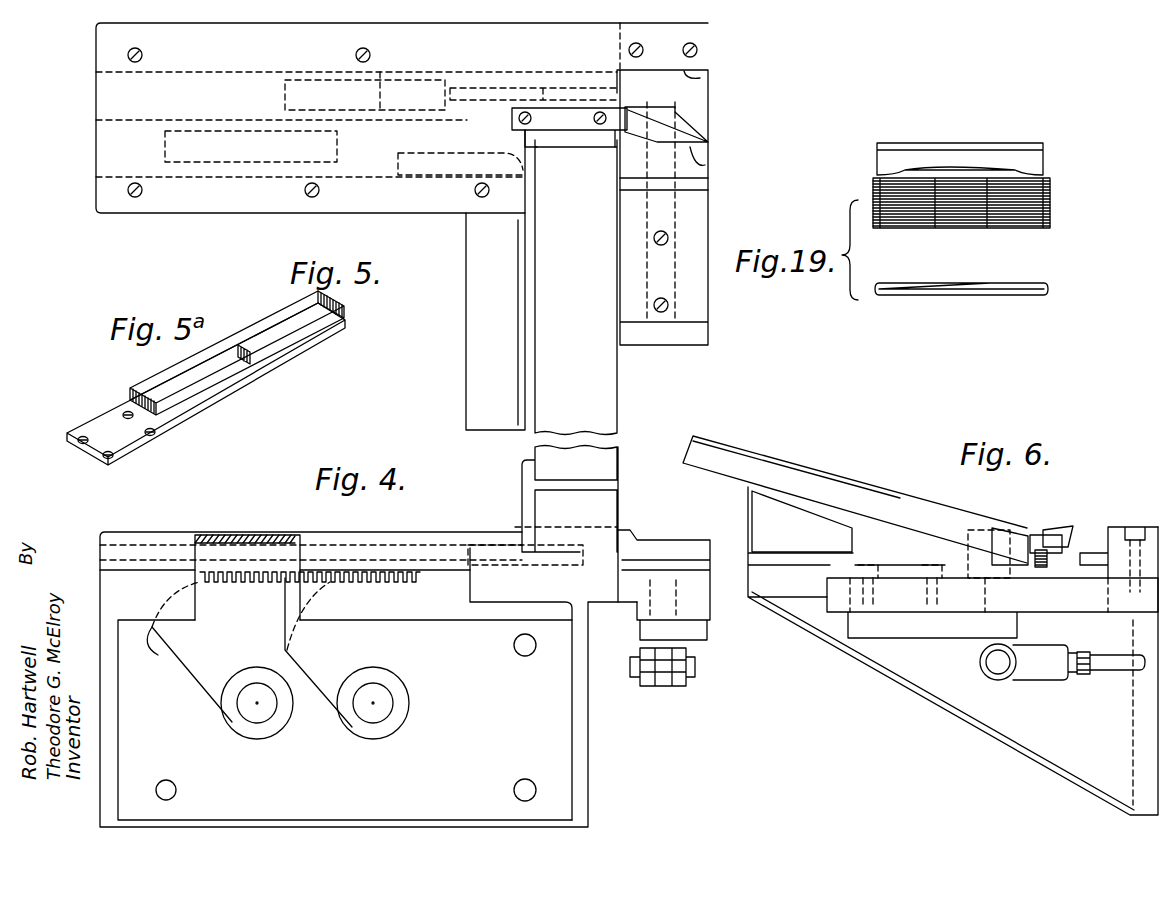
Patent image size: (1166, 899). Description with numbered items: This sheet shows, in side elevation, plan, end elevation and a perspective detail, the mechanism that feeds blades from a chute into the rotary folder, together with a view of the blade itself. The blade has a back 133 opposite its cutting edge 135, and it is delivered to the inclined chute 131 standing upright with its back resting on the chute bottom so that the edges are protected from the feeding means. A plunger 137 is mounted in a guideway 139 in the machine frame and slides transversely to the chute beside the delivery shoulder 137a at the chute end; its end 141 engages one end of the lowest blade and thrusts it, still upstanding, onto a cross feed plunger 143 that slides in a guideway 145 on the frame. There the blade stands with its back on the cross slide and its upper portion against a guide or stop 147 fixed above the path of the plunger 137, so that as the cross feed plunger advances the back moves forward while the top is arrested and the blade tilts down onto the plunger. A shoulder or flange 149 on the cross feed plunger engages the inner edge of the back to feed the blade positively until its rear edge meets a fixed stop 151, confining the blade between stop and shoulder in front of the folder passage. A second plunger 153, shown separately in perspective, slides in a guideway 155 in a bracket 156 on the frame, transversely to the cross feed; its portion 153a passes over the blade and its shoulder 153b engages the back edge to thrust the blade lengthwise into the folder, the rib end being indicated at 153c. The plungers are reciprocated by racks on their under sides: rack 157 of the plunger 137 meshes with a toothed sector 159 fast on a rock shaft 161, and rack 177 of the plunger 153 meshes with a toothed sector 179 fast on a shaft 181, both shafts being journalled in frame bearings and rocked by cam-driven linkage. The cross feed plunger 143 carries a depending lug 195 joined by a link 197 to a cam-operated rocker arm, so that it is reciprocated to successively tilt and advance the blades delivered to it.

In FIG. 6, the chute 131 is at (745, 455).
In FIG. 19, the back 133 is at (968, 147).
In FIG. 19, the cutting edge 135 is at (967, 230).
In FIG. 5, the plunger 137 is at (437, 148).
In FIG. 5, the delivery shoulder 137a is at (513, 192).
In FIG. 5, the guideway 139 is at (457, 177).
In FIG. 5, the end of plunger 141 is at (585, 140).
In FIG. 5, the cross feed plunger 143 is at (700, 211).
In FIG. 6, the cross feed plunger 143 is at (907, 568).
In FIG. 4, the guideway 145 is at (706, 601).
In FIG. 6, the guideway 145 is at (1050, 604).
In FIG. 5, the guide or stop 147 is at (705, 163).
In FIG. 6, the guide or stop 147 is at (1062, 527).
In FIG. 5, the shoulder or flange 149 is at (702, 187).
In FIG. 6, the shoulder or flange 149 is at (994, 532).
In FIG. 5, the fixed stop 151 is at (702, 77).
In FIG. 5, the plunger 153 is at (510, 72).
In FIG. 5A, the plunger 153 is at (188, 420).
In FIG. 5A, the portion of plunger 153a is at (300, 350).
In FIG. 5A, the shoulder 153b is at (252, 363).
In FIG. 5A, the rib end 153c is at (357, 303).
In FIG. 5, the guideway 155 is at (468, 120).
In FIG. 5, the bracket 156 is at (472, 322).
In FIG. 4, the rack 157 is at (222, 567).
In FIG. 4, the toothed sector 159 is at (188, 668).
In FIG. 4, the rock shaft 161 is at (247, 712).
In FIG. 4, the rack 177 is at (402, 582).
In FIG. 4, the toothed sector 179 is at (408, 678).
In FIG. 4, the shaft 181 is at (390, 705).
In FIG. 4, the lug 195 is at (695, 660).
In FIG. 6, the lug 195 is at (978, 655).
In FIG. 6, the link 197 is at (1108, 672).